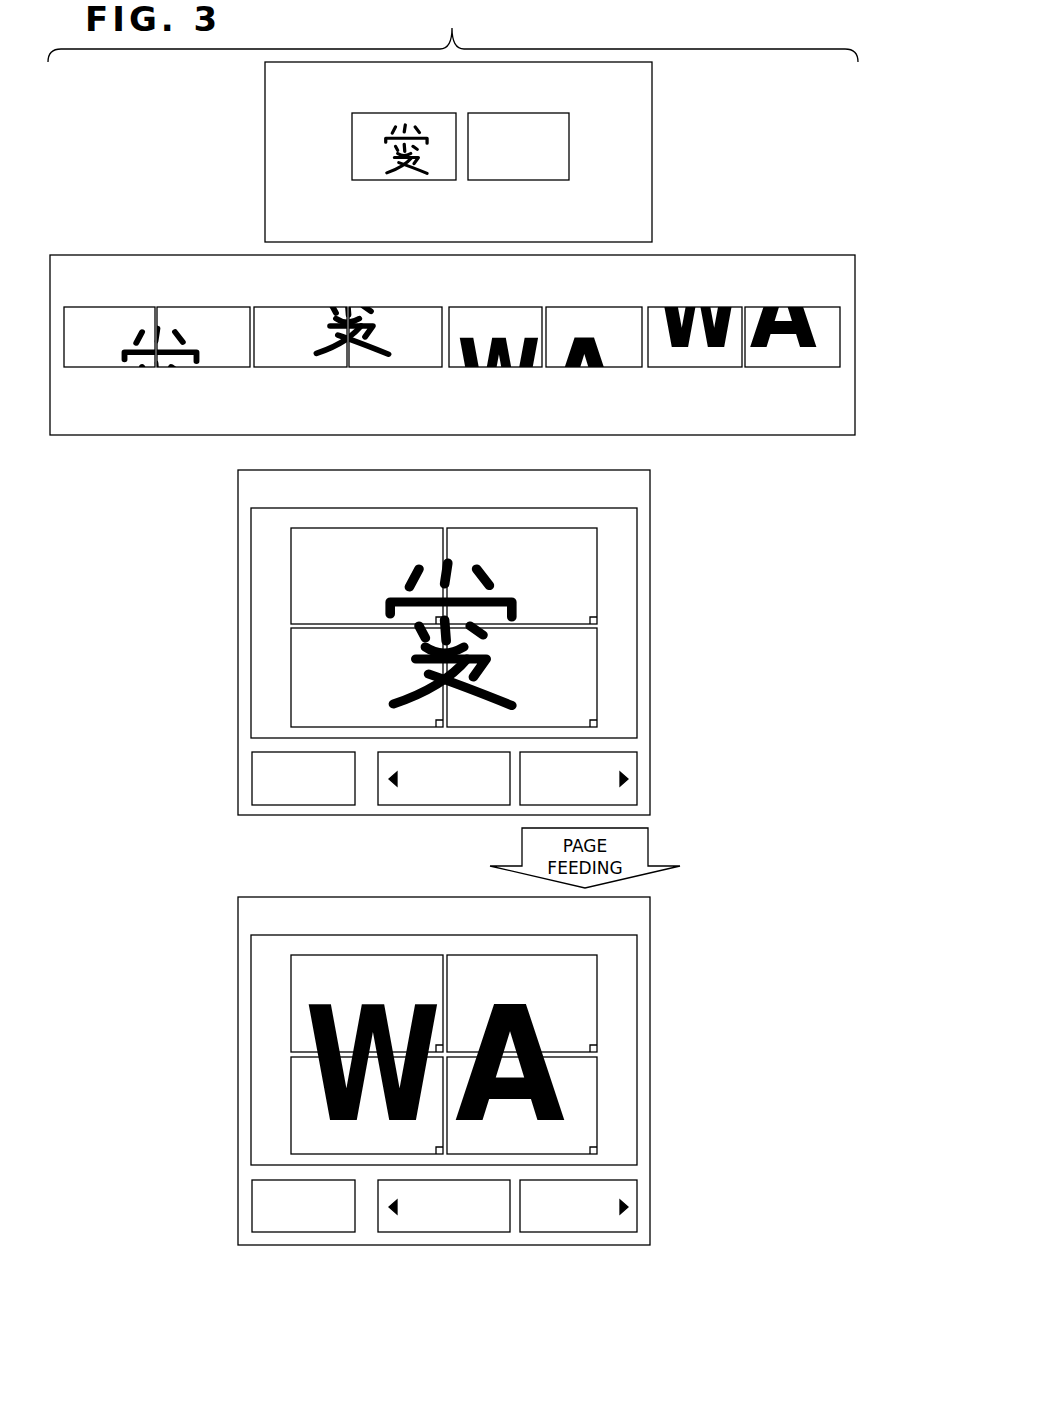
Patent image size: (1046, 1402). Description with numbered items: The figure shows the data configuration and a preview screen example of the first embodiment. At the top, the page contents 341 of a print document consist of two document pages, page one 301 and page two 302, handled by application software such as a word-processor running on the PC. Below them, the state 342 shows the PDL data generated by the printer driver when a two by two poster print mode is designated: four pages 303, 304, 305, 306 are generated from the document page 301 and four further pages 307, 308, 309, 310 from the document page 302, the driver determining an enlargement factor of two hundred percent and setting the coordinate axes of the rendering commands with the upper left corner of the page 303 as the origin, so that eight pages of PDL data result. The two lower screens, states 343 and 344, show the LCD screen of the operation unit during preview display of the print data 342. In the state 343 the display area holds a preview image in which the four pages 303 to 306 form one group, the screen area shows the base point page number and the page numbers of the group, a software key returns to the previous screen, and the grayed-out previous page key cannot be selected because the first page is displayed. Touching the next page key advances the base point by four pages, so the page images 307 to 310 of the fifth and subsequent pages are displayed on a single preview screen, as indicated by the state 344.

The document page 301 is at (413, 181).
The document page 302 is at (540, 181).
The page 303 is at (110, 368).
The page 304 is at (203, 368).
The page 305 is at (303, 368).
The page 306 is at (405, 368).
The page 307 is at (506, 368).
The page 308 is at (595, 368).
The page 309 is at (710, 368).
The page 310 is at (798, 368).
The page contents 341 is at (747, 89).
The PDL data state 342 is at (857, 227).
The LCD screen state 343 is at (745, 495).
The LCD screen state 344 is at (747, 920).